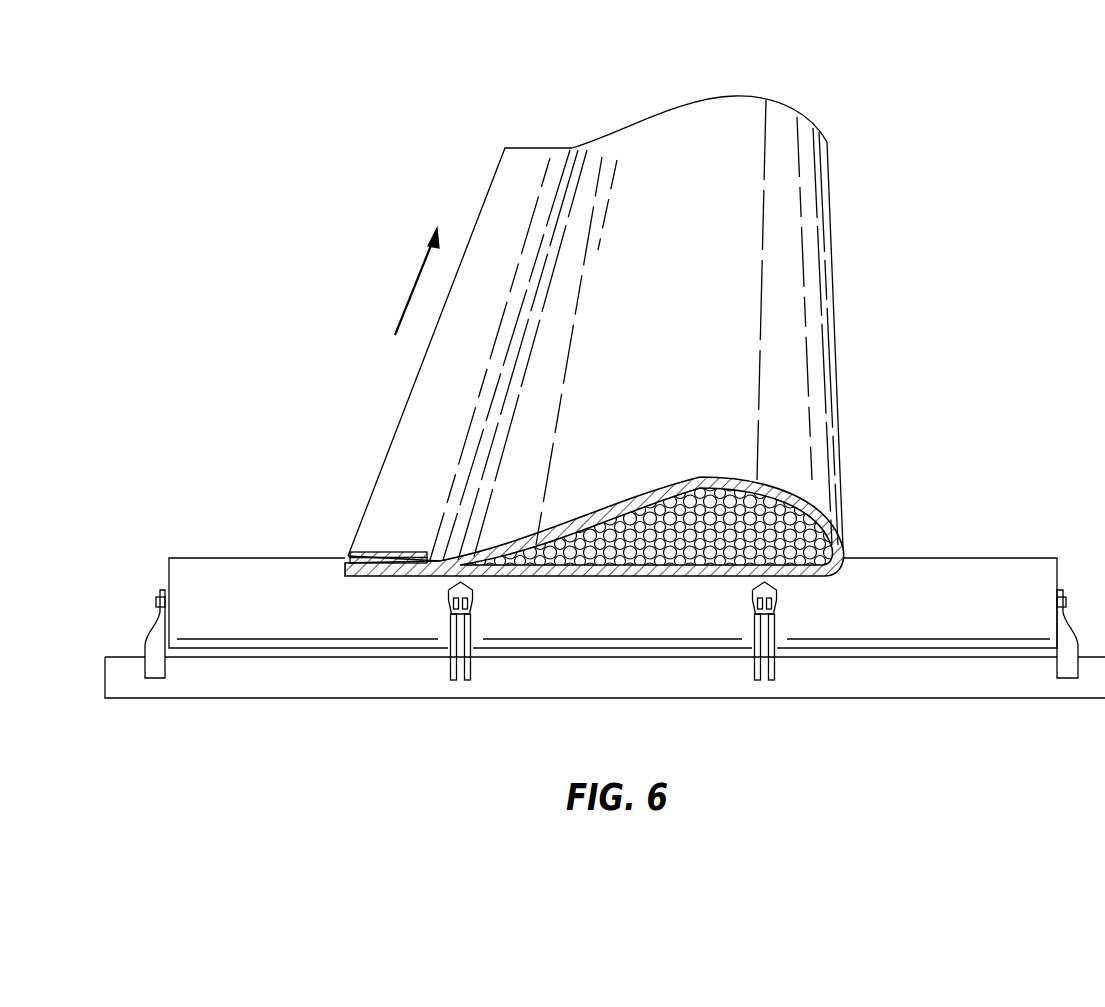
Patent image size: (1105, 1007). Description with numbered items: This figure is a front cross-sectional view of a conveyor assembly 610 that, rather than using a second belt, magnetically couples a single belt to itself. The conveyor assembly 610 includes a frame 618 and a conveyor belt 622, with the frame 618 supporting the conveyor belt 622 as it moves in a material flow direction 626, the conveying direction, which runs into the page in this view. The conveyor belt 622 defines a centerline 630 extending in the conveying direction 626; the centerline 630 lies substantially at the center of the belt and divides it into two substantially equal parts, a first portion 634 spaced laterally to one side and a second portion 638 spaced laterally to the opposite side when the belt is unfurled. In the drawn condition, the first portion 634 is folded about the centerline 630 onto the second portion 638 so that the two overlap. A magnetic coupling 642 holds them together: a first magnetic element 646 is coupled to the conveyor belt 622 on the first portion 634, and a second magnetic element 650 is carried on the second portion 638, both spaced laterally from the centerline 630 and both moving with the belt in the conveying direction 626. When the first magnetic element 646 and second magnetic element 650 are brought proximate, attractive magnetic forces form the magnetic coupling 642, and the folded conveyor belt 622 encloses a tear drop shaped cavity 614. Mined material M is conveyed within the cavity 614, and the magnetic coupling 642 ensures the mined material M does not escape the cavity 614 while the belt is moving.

The conveyor assembly 610 is at (461, 104).
The first magnetic element 646 is at (527, 167).
The conveyor belt 622 is at (805, 132).
The material flow direction 626 is at (420, 273).
The first portion 634 is at (692, 322).
The magnetic coupling 642 is at (346, 495).
The centerline 630 is at (845, 550).
The mined material M is at (698, 538).
The second magnetic element 650 is at (396, 568).
The second portion 638 is at (574, 565).
The cavity 614 is at (790, 570).
The frame 618 is at (242, 714).